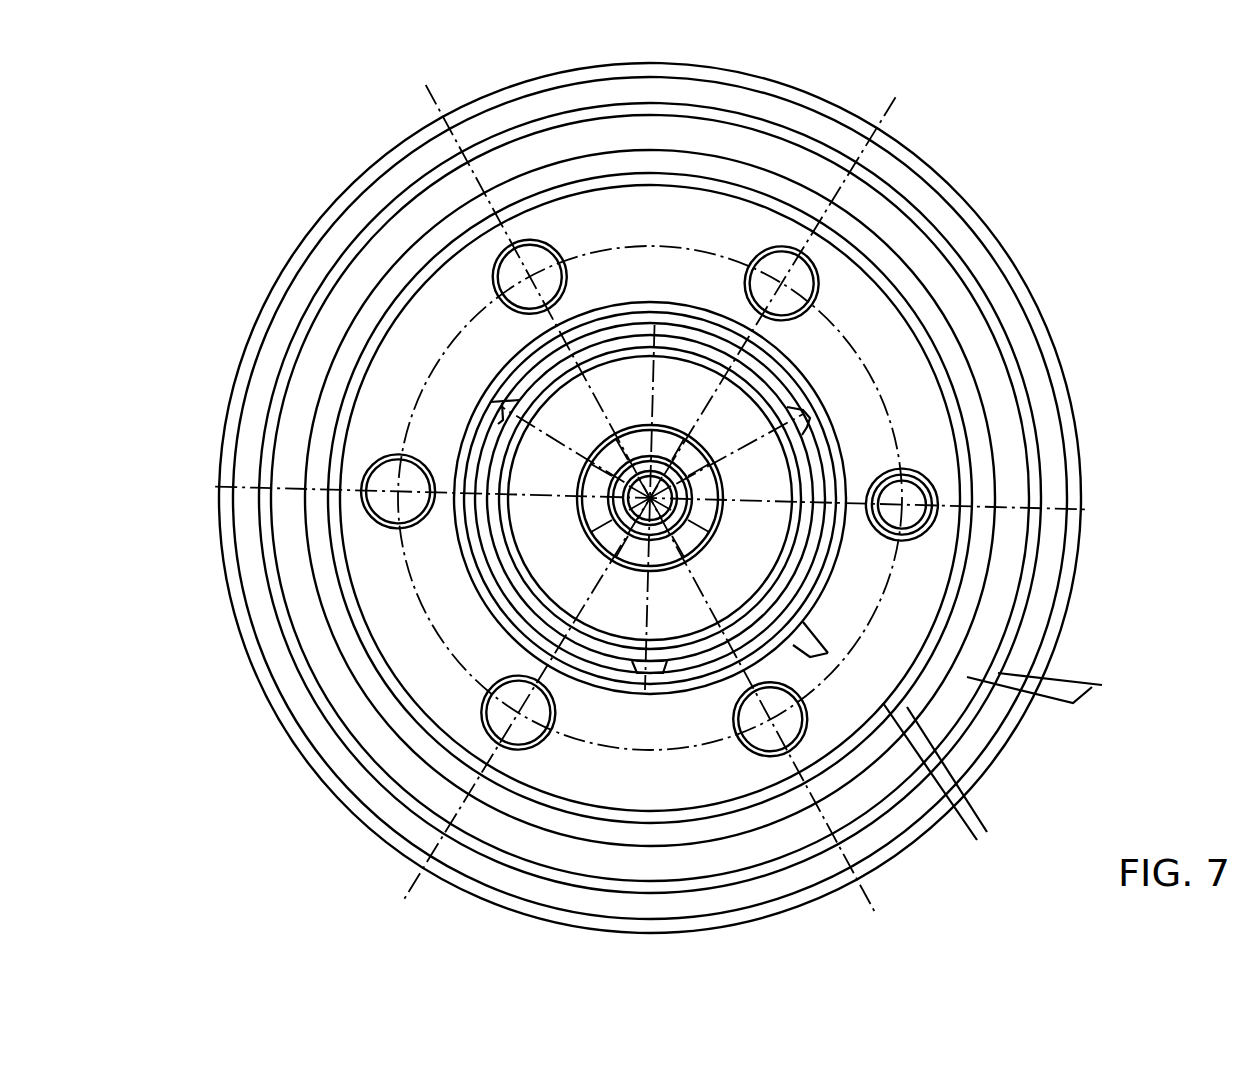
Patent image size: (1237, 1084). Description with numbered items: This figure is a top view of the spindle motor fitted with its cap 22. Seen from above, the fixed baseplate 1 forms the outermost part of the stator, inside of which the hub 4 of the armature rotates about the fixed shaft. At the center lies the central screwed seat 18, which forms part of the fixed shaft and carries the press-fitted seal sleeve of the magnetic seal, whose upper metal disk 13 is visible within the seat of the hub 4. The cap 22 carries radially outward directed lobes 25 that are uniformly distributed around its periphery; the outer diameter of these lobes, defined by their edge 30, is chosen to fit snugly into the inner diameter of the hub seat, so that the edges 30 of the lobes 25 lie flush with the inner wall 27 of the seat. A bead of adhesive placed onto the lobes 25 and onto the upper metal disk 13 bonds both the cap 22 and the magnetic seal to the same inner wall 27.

The fixed baseplate 1 is at (1102, 685).
The hub 4 is at (653, 512).
The metal disks 13 is at (815, 452).
The central screwed seat 18 is at (655, 501).
The cap 22 is at (773, 488).
The lobes 25 is at (808, 421).
The inner wall 27 is at (778, 380).
The edge 30 is at (803, 414).